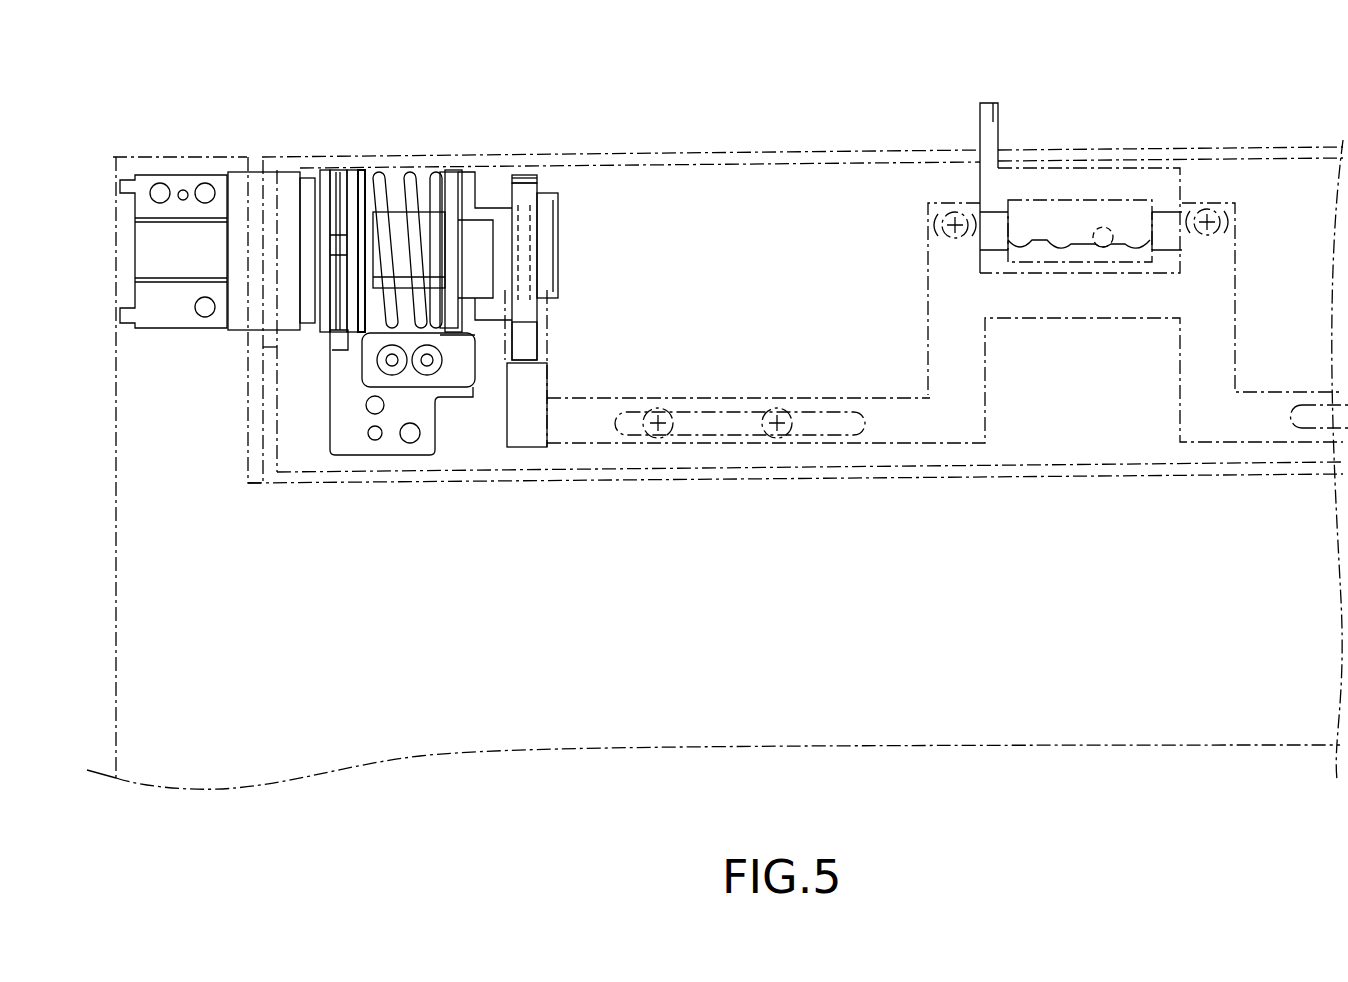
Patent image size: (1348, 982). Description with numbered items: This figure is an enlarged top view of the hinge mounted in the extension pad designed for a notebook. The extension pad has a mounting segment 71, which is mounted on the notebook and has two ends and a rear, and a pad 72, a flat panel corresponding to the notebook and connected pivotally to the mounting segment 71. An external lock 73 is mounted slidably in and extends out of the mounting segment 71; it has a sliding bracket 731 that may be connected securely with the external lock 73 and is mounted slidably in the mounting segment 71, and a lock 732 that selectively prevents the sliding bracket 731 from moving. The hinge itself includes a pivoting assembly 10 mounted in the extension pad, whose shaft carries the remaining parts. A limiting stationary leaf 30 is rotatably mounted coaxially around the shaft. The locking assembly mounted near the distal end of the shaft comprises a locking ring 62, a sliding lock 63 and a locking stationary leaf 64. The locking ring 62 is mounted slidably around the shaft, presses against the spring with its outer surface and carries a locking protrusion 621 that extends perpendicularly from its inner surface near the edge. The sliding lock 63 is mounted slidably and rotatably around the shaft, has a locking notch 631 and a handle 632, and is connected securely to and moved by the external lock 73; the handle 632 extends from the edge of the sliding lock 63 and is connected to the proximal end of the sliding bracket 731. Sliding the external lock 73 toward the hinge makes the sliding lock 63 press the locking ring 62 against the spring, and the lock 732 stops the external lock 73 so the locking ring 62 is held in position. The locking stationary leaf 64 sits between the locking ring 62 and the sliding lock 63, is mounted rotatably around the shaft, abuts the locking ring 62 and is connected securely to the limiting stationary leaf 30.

The pivoting assembly 10 is at (167, 183).
The limiting stationary leaf 30 is at (362, 442).
The locking ring 62 is at (528, 229).
The locking protrusion 621 is at (483, 280).
The sliding lock 63 is at (580, 253).
The locking notch 631 is at (530, 175).
The handle 632 is at (523, 342).
The locking stationary leaf 64 is at (443, 378).
The mounting segment 71 is at (760, 152).
The pad 72 is at (132, 403).
The external lock 73 is at (993, 103).
The sliding bracket 731 is at (945, 323).
The lock 732 is at (1130, 288).